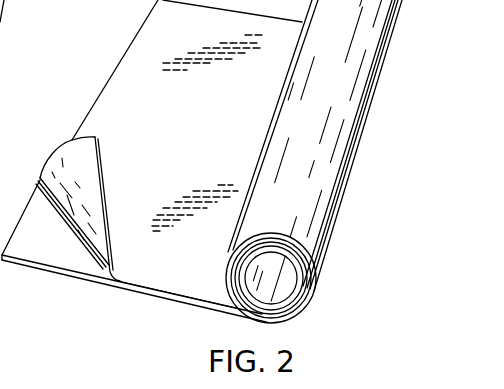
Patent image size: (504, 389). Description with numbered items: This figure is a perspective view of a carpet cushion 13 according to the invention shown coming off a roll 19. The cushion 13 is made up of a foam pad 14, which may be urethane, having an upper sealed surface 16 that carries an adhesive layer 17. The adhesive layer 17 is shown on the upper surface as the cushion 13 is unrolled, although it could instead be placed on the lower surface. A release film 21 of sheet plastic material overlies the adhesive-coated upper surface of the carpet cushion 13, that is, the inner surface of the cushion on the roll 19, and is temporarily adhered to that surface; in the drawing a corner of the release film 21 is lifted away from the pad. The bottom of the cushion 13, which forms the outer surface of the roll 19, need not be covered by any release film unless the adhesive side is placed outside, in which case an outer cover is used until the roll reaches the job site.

The carpet cushion 13 is at (134, 270).
The foam pad 14 is at (97, 283).
The upper sealed surface 16 is at (33, 257).
The adhesive layer 17 is at (60, 263).
The roll 19 is at (315, 309).
The release film 21 is at (100, 188).